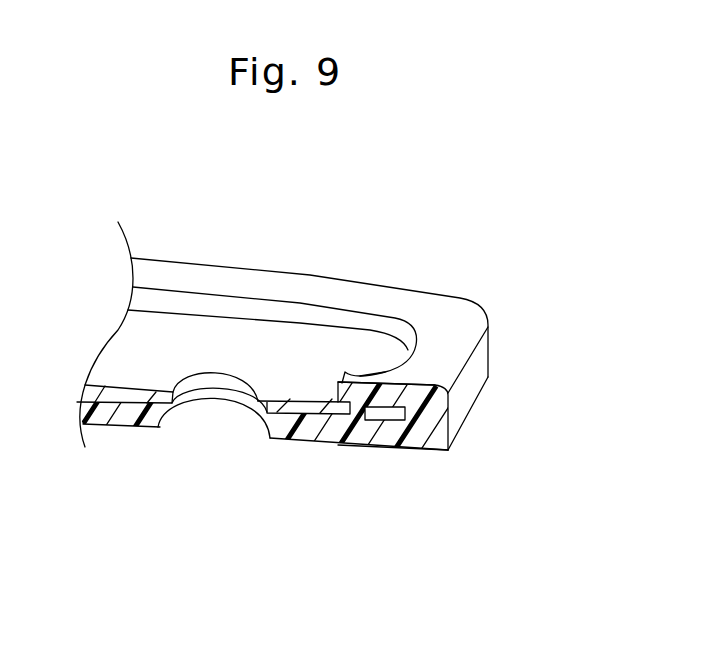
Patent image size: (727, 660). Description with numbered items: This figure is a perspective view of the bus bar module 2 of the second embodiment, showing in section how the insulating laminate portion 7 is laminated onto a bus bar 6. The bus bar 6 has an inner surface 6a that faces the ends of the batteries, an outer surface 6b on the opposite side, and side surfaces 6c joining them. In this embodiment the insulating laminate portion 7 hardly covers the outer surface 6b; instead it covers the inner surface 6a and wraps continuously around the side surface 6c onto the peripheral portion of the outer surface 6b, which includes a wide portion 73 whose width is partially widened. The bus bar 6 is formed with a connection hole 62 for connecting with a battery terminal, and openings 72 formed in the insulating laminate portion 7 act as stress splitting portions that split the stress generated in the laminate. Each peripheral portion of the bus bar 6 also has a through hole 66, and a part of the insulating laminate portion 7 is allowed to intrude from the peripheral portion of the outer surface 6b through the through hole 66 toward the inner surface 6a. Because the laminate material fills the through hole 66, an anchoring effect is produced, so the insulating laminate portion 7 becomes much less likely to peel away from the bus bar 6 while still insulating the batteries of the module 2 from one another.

The bus bar module 2 is at (541, 277).
The bus bar 6 is at (322, 348).
The connection hole 62 is at (222, 372).
The wide portion 73 is at (362, 374).
The inner surface 6a is at (412, 447).
The outer surface 6b is at (396, 389).
The side surface 6c is at (406, 417).
The insulating laminate portion 7 is at (345, 447).
The through hole 66 is at (370, 444).
The opening 72 is at (220, 400).